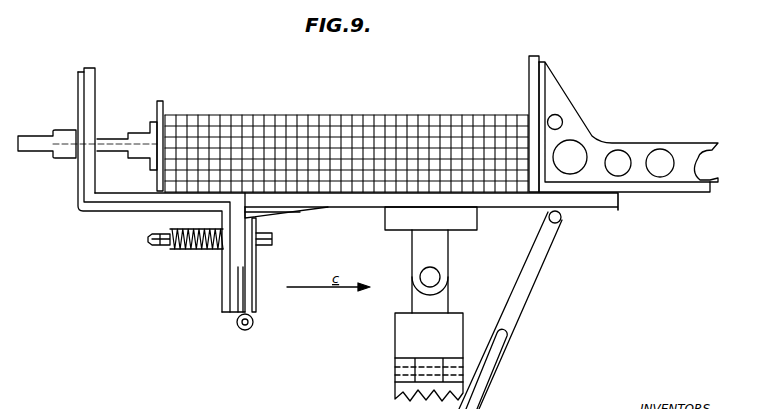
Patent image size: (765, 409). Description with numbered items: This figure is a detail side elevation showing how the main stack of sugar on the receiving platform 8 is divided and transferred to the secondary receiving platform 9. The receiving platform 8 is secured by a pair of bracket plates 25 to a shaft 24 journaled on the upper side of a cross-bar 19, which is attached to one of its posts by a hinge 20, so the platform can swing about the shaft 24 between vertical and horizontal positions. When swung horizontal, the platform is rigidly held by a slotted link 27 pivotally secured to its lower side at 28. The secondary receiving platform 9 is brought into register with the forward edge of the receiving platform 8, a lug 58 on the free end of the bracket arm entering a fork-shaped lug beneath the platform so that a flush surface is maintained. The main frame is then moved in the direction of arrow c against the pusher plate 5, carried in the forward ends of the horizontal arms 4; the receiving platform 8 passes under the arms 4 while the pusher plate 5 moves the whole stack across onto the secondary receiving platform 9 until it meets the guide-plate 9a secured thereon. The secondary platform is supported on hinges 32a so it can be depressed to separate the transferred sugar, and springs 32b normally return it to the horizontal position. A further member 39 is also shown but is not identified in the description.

The horizontal arms 4 is at (628, 127).
The pusher plate 5 is at (533, 93).
The receiving platform 8 is at (355, 199).
The secondary receiving platform 9 is at (118, 198).
The guide-plate 9a is at (163, 107).
The cross-bar 19 is at (429, 357).
The hinge 20 is at (400, 372).
The shaft 24 is at (441, 277).
The bracket plates 25 is at (431, 260).
The slotted link 27 is at (528, 283).
The pivotal connection of link 28 is at (562, 217).
The hinges 32a is at (254, 322).
The springs 32b is at (188, 251).
The hanger arm 39 is at (300, 209).
The lug 58 is at (256, 210).